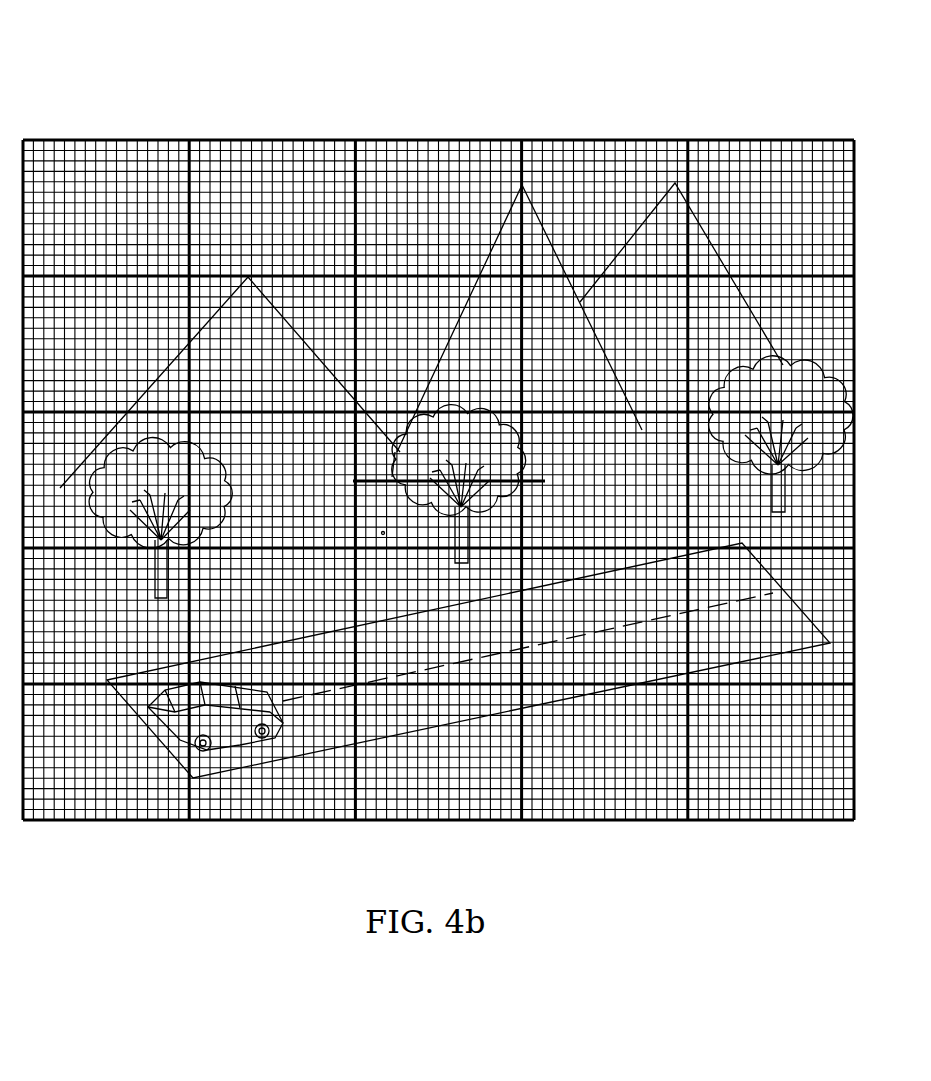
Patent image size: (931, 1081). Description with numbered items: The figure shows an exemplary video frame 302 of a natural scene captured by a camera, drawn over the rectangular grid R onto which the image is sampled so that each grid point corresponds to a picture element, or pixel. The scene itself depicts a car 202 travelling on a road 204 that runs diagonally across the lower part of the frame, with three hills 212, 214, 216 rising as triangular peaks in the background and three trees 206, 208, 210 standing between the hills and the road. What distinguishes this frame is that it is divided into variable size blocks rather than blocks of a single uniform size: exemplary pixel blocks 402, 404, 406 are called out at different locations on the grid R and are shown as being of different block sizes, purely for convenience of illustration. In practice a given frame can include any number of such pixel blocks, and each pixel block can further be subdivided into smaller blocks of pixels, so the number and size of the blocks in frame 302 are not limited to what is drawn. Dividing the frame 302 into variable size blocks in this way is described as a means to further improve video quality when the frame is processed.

The frame 302 is at (117, 67).
The pixel block 402 is at (82, 198).
The rectangular grid R is at (260, 197).
The hill 212 is at (288, 320).
The hill 214 is at (535, 210).
The hill 216 is at (707, 231).
The pixel block 404 is at (372, 437).
The pixel block 406 is at (383, 533).
The tree 206 is at (222, 517).
The tree 208 is at (540, 481).
The tree 210 is at (732, 467).
The road 204 is at (610, 693).
The car 202 is at (170, 700).